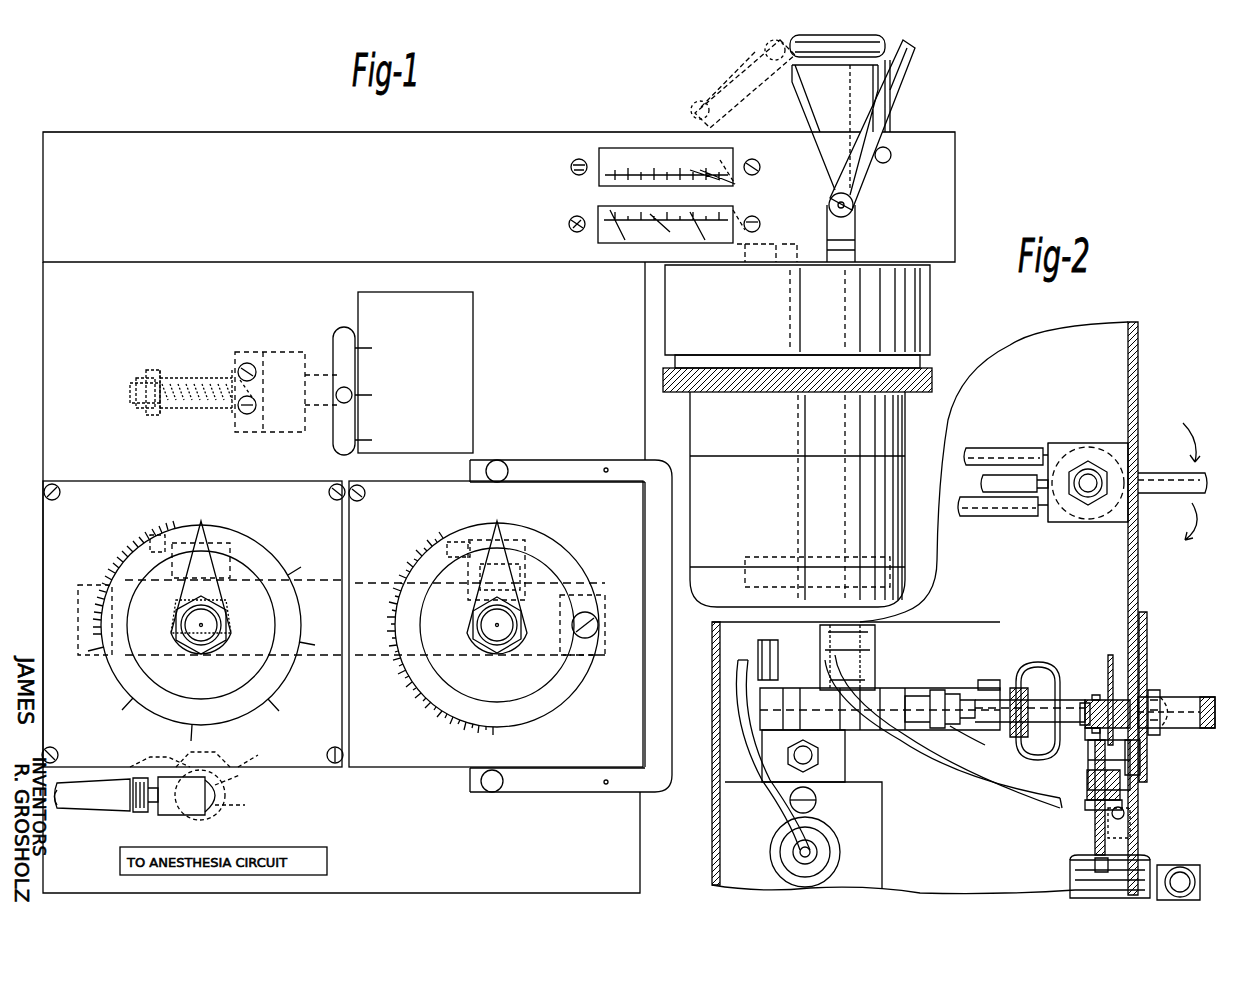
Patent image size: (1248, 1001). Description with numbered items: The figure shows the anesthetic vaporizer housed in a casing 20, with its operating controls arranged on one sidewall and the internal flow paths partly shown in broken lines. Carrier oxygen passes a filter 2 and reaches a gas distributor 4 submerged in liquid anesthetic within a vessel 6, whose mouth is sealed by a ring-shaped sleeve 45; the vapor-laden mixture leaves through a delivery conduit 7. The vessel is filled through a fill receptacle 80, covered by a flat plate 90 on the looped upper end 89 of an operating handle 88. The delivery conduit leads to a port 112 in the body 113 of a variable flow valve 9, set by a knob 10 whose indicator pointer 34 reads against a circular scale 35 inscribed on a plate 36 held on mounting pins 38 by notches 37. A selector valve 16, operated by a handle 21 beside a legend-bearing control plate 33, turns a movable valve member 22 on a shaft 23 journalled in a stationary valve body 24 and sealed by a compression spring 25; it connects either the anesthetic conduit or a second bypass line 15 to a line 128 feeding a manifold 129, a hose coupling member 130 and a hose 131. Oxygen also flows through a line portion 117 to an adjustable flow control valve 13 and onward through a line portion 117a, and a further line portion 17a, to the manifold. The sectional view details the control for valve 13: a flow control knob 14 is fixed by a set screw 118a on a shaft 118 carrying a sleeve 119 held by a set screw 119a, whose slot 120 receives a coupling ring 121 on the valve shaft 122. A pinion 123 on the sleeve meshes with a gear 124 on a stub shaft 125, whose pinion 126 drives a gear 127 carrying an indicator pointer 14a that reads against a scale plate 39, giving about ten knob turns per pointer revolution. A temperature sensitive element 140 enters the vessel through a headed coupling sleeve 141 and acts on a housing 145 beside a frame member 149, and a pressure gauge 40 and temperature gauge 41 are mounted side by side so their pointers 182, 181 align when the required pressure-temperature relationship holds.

In FIG. 1, the filter 2 is at (224, 239).
In FIG. 1, the gas distributor 4 is at (783, 501).
In FIG. 1, the vessel 6 is at (912, 450).
In FIG. 2, the delivery conduit 7 is at (1000, 516).
In FIG. 1, the variable flow valve 9 is at (462, 601).
In FIG. 1, the knob 10 is at (496, 645).
In FIG. 1, the adjustable flow control valve 13 is at (248, 576).
In FIG. 1, the flow control knob 14 is at (200, 640).
In FIG. 2, the flow control knob 14 is at (1210, 730).
In FIG. 1, the indicator pointer 14a is at (214, 540).
In FIG. 2, the indicator pointer 14a is at (1148, 636).
In FIG. 2, the second bypass line 15 is at (1005, 450).
In FIG. 1, the selector valve 16 is at (316, 330).
In FIG. 2, the selector valve 16 is at (1102, 432).
In FIG. 1, the oxygen flowmeter housing 17a is at (82, 548).
In FIG. 1, the casing 20 is at (483, 116).
In FIG. 1, the selector valve operating handle 21 is at (343, 405).
In FIG. 2, the selector valve operating handle 21 is at (1165, 478).
In FIG. 1, the movable valve member 22 is at (280, 435).
In FIG. 2, the movable valve member 22 is at (1068, 522).
In FIG. 1, the shaft 23 is at (210, 410).
In FIG. 1, the stationary valve body 24 is at (270, 350).
In FIG. 2, the stationary valve body 24 is at (1060, 445).
In FIG. 1, the compression spring 25 is at (165, 375).
In FIG. 1, the control plate 33 is at (460, 352).
In FIG. 1, the indicator pointer 34 is at (503, 544).
In FIG. 1, the scale 35 is at (455, 525).
In FIG. 1, the plate 36 is at (598, 614).
In FIG. 1, the notches 37 is at (470, 470).
In FIG. 1, the mounting pins 38 is at (500, 462).
In FIG. 1, the scale plate 39 is at (320, 750).
In FIG. 1, the pressure gauge 40 is at (598, 180).
In FIG. 1, the temperature gauge 41 is at (598, 233).
In FIG. 1, the ring-shaped sleeve 45 is at (930, 335).
In FIG. 1, the fill receptacle 80 is at (905, 108).
In FIG. 1, the operating handle 88 is at (910, 60).
In FIG. 1, the upper end 89 is at (775, 48).
In FIG. 1, the flat plate 90 is at (866, 36).
In FIG. 1, the port 112 is at (525, 545).
In FIG. 1, the body 113 is at (525, 560).
In FIG. 2, the body 113 is at (847, 657).
In FIG. 2, the line portion 117 is at (798, 650).
In FIG. 1, the line portion 117a is at (168, 730).
In FIG. 2, the line portion 117a is at (943, 731).
In FIG. 2, the shaft 118 is at (1095, 705).
In FIG. 2, the set screw 118a is at (1165, 700).
In FIG. 2, the sleeve 119 is at (1098, 695).
In FIG. 2, the set screw 119a is at (1088, 730).
In FIG. 2, the slot 120 is at (1046, 655).
In FIG. 2, the coupling ring 121 is at (1050, 760).
In FIG. 2, the valve shaft 122 is at (985, 700).
In FIG. 2, the pinion 123 is at (1096, 695).
In FIG. 2, the gear 124 is at (1095, 842).
In FIG. 2, the stub shaft 125 is at (1085, 790).
In FIG. 2, the pinion 126 is at (1118, 812).
In FIG. 2, the gear 127 is at (1136, 770).
In FIG. 1, the line 128 is at (210, 775).
In FIG. 2, the line 128 is at (1014, 483).
In FIG. 1, the manifold 129 is at (215, 805).
In FIG. 2, the manifold 129 is at (1135, 877).
In FIG. 1, the hose coupling member 130 is at (140, 812).
In FIG. 1, the hose 131 is at (90, 803).
In FIG. 2, the temperature sensitive element 140 is at (758, 800).
In FIG. 2, the headed coupling sleeve 141 is at (845, 765).
In FIG. 2, the housing 145 is at (845, 855).
In FIG. 2, the frame member 149 is at (880, 818).
In FIG. 1, the temperature pointer 181 is at (735, 180).
In FIG. 1, the pressure pointer 182 is at (736, 214).